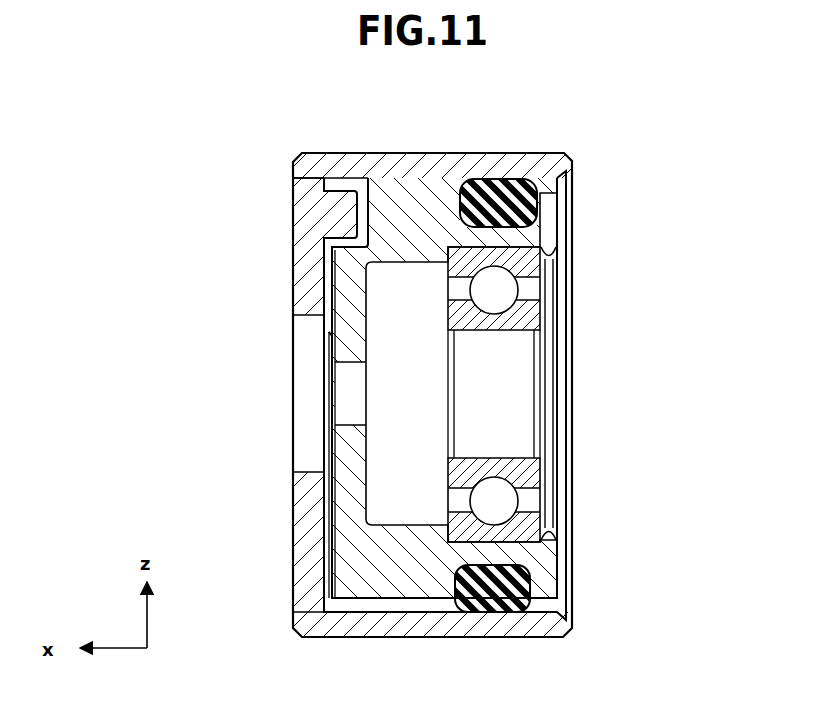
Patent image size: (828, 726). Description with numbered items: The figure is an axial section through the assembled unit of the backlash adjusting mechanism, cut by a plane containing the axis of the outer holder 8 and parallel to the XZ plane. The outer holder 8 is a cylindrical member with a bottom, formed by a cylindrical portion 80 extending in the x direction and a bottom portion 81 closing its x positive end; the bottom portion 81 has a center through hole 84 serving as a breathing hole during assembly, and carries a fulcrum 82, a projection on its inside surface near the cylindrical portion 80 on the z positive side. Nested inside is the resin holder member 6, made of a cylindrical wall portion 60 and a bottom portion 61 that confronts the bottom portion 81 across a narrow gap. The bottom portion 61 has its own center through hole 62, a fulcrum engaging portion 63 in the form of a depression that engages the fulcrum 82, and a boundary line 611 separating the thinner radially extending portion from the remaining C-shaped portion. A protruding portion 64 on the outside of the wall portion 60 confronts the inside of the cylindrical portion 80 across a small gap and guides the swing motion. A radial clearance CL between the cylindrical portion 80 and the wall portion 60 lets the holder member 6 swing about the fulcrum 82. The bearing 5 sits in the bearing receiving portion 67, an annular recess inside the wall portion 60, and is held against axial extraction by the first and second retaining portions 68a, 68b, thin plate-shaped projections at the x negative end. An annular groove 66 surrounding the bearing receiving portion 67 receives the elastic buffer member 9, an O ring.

The outer holder 8 is at (352, 149).
The center through hole 84 is at (300, 322).
The bottom portion 81 is at (300, 535).
The cylindrical portion 80 is at (400, 625).
The fulcrum 82 is at (350, 212).
The holder member 6 is at (433, 176).
The protruding portion 64 is at (403, 190).
The fulcrum engaging portion 63 is at (350, 224).
The center through hole 62 is at (347, 414).
The boundary line 611 is at (330, 336).
The bottom portion 61 is at (345, 453).
The cylindrical wall portion 60 is at (443, 583).
The clearance CL is at (377, 602).
The buffer member 9 is at (508, 183).
The annular groove 66 is at (495, 582).
The bearing 5 is at (546, 318).
The bearing receiving portion 67 is at (543, 250).
The first retaining portion 68a is at (550, 258).
The second retaining portion 68b is at (550, 530).